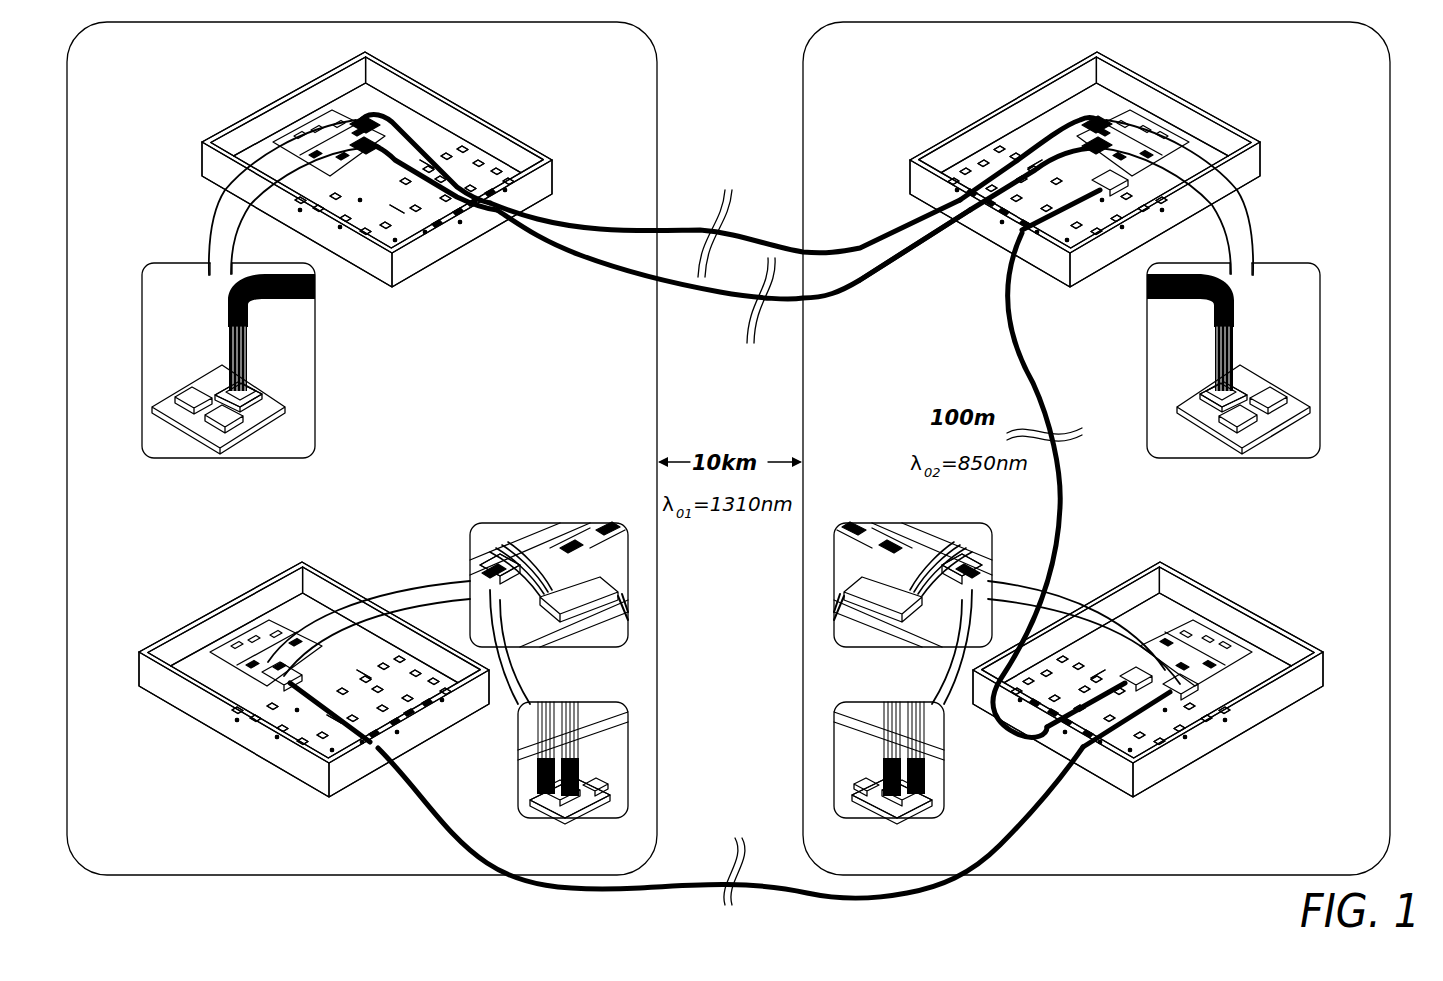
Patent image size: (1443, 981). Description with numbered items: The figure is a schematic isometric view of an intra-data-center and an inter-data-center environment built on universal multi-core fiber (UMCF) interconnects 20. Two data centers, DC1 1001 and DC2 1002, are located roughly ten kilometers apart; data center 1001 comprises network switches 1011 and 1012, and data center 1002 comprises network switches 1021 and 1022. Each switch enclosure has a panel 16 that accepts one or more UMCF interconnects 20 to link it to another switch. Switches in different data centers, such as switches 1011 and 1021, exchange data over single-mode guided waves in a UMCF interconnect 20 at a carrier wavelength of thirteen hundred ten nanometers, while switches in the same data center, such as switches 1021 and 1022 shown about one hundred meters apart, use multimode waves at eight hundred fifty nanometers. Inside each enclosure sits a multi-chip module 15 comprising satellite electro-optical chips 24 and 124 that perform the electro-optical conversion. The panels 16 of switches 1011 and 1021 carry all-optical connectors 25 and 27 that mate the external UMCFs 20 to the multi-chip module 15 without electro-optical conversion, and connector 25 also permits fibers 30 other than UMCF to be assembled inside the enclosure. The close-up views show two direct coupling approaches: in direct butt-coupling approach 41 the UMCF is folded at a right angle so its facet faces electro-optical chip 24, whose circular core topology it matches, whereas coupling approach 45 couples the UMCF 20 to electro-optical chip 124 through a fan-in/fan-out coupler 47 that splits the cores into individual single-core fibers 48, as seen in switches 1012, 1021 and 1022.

The multi-chip module 15 is at (325, 118).
The panel 16 is at (548, 178).
The universal multi-core fiber interconnect 20 is at (748, 232).
The satellite electro-optical chip 24 is at (252, 392).
The optical-to-optical connector 25 is at (492, 212).
The optical-to-optical connector 27 is at (968, 248).
The fibers 30 is at (468, 207).
The direct butt-coupling approach 41 is at (383, 112).
The coupling approach 45 is at (266, 680).
The fan-in/fan-out coupler 47 is at (565, 618).
The single core fibers 48 is at (530, 758).
The satellite electro-optical chip 124 is at (592, 800).
The data center DC1 1001 is at (152, 73).
The data center DC2 1002 is at (888, 73).
The network switch 1011 is at (535, 100).
The network switch 1012 is at (196, 580).
The network switch 1021 is at (1257, 84).
The network switch 1022 is at (1266, 580).